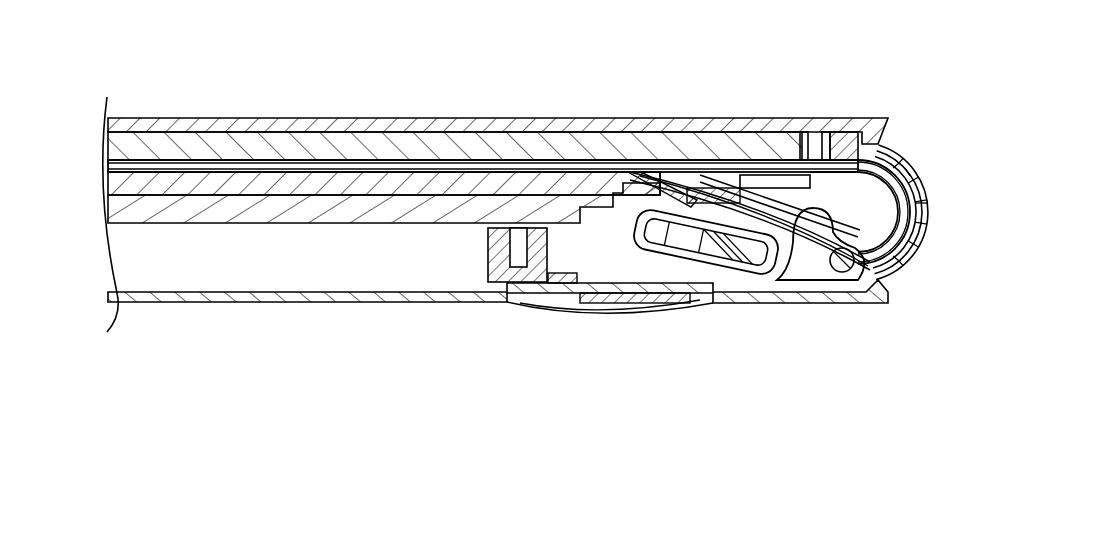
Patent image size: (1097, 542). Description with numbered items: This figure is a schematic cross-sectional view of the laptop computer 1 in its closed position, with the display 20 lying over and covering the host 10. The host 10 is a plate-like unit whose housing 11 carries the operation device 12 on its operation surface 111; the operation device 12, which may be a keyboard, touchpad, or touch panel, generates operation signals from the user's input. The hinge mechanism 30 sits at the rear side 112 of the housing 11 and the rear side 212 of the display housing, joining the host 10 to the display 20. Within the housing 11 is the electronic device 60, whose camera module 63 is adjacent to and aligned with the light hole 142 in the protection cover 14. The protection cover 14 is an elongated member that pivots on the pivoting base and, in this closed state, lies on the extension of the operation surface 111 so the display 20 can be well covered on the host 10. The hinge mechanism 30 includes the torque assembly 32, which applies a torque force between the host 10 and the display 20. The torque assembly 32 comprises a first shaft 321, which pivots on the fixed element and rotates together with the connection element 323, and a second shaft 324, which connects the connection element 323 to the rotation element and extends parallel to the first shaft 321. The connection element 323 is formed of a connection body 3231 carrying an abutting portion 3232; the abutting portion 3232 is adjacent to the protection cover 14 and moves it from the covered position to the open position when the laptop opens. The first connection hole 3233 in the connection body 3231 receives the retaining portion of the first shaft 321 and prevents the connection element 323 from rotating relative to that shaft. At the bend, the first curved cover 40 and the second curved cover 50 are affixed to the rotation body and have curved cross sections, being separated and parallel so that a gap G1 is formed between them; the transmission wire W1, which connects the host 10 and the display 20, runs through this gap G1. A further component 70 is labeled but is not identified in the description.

The laptop computer 1 is at (20, 72).
The host 10 is at (229, 304).
The housing 11 is at (603, 173).
The operation surface 111 is at (343, 165).
The rear side 112 is at (890, 290).
The operation device 12 is at (286, 183).
The protection cover 14 is at (648, 183).
The light hole 142 is at (686, 186).
The display 20 is at (229, 115).
The rear side 212 is at (890, 137).
The hinge mechanism 30 is at (916, 114).
The torque assembly 32 is at (870, 360).
The first shaft 321 is at (742, 282).
The connection element 323 is at (797, 282).
The second shaft 324 is at (865, 282).
The connection body 3231 is at (687, 303).
The abutting portion 3232 is at (800, 206).
The first connection hole 3233 is at (745, 195).
The first curved cover 40 is at (923, 224).
The second curved cover 50 is at (840, 133).
The electronic device 60 is at (754, 221).
The camera module 63 is at (713, 200).
The protective layer 70 is at (913, 248).
The gap G1 is at (907, 175).
The transmission wire W1 is at (923, 203).